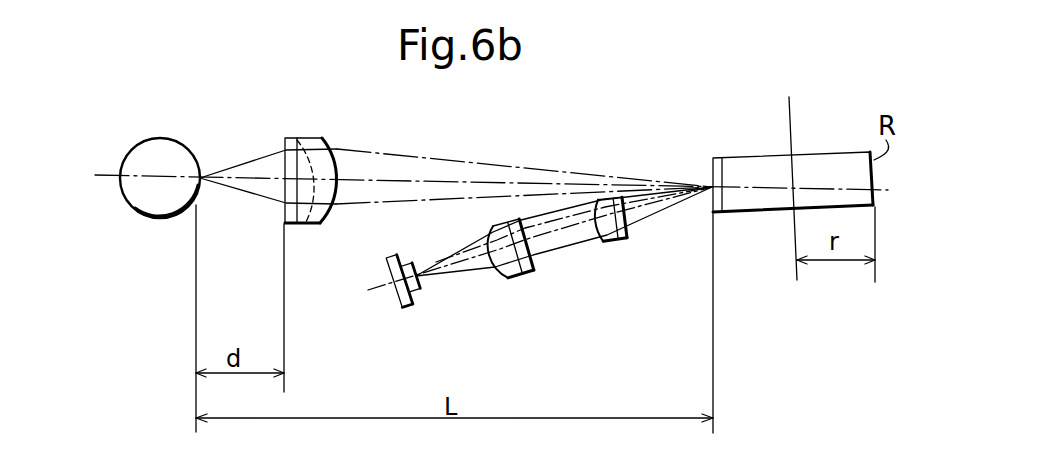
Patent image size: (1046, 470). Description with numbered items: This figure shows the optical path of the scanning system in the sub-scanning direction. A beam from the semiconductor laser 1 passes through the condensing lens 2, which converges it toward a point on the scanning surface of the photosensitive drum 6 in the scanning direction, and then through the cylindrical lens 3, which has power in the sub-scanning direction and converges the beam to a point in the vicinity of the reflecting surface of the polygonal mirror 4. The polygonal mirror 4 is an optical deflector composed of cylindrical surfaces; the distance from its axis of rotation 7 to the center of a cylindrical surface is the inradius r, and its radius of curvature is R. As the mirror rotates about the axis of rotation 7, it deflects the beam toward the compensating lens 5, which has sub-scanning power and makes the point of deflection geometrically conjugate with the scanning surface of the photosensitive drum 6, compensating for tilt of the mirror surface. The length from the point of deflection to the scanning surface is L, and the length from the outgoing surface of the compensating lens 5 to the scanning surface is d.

The semiconductor laser 1 is at (392, 256).
The condensing lens 2 is at (527, 275).
The cylindrical lens 3 is at (630, 241).
The polygonal mirror 4 is at (740, 172).
The compensating lens 5 is at (309, 228).
The photosensitive drum 6 is at (157, 209).
The axis of rotation 7 is at (792, 122).